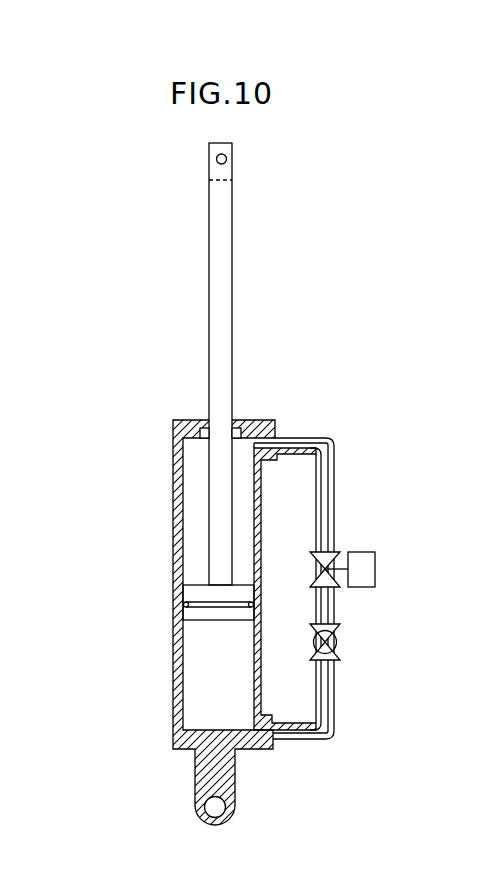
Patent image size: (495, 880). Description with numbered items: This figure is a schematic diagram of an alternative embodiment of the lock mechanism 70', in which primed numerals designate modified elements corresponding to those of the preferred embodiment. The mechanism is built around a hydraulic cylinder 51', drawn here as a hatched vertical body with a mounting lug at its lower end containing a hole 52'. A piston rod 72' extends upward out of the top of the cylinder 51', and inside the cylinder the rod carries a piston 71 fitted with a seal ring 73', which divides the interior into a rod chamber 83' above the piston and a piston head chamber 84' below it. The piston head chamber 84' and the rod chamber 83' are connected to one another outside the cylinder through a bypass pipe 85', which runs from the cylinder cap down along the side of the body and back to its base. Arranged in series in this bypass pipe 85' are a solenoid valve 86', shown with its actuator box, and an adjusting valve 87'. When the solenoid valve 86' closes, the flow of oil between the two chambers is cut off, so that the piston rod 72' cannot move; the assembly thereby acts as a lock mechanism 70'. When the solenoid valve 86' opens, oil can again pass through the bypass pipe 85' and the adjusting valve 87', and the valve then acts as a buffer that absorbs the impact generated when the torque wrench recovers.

The lock mechanism 70' is at (282, 487).
The hydraulic cylinder 51' is at (207, 626).
The mounting hole 52' is at (247, 815).
The piston rod 72' is at (252, 364).
The rod chamber 83' is at (240, 418).
The piston head chamber 84' is at (222, 586).
The piston 71 is at (184, 619).
The piston seal ring 73' is at (188, 594).
The bypass pipe 85' is at (328, 588).
The solenoid valve 86' is at (347, 550).
The adjusting valve 87' is at (356, 642).